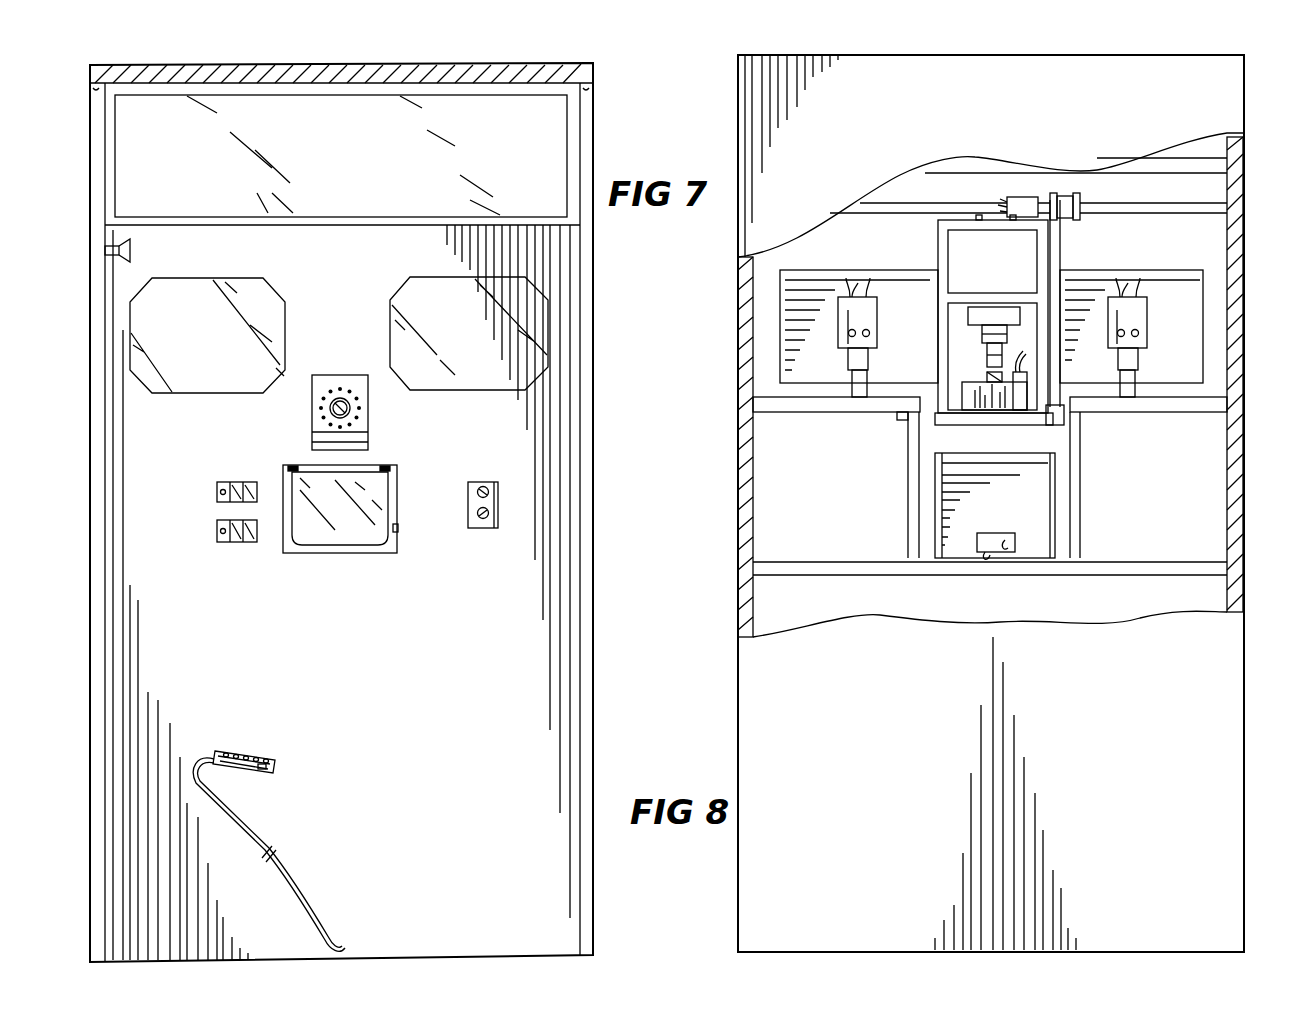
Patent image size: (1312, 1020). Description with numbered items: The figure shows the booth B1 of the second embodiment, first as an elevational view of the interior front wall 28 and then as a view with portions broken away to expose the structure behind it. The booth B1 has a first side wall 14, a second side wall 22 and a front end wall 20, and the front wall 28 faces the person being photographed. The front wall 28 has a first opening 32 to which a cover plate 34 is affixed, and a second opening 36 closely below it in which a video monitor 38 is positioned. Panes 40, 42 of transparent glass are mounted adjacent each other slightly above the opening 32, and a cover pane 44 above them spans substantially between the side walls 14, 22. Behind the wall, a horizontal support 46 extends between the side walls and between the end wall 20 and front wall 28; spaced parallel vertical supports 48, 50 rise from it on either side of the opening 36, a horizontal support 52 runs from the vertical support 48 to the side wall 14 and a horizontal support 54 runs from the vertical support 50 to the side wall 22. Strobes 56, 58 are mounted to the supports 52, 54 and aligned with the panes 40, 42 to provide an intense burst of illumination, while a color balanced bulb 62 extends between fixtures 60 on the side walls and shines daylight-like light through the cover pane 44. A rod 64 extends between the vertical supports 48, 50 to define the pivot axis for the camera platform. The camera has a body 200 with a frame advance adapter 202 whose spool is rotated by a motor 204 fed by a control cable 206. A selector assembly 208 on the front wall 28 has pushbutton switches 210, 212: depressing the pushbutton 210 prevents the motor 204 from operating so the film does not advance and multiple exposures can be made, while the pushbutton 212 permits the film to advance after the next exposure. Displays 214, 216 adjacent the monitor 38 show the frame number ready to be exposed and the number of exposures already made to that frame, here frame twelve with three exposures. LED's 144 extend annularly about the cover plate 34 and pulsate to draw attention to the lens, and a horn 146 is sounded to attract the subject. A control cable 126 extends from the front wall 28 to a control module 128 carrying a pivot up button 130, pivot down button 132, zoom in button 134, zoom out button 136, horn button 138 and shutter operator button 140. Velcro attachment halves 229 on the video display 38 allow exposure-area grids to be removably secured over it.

In FIG. 8, the first side wall 14 is at (1229, 537).
In FIG. 8, the front end wall 20 is at (896, 770).
In FIG. 8, the second side wall 22 is at (738, 492).
In FIG. 7, the front wall 28 is at (463, 850).
In FIG. 8, the front wall 28 is at (1148, 504).
In FIG. 7, the first opening 32 is at (333, 387).
In FIG. 7, the cover plate 34 is at (344, 375).
In FIG. 7, the second opening 36 is at (346, 494).
In FIG. 8, the second opening 36 is at (1032, 505).
In FIG. 7, the video monitor 38 is at (372, 500).
In FIG. 8, the video monitor 38 is at (1006, 512).
In FIG. 7, the pane 40 is at (268, 292).
In FIG. 8, the pane 40 is at (1131, 312).
In FIG. 7, the pane 42 is at (405, 290).
In FIG. 8, the pane 42 is at (859, 312).
In FIG. 7, the cover pane 44 is at (320, 166).
In FIG. 8, the cover pane 44 is at (938, 198).
In FIG. 8, the horizontal support 46 is at (1030, 565).
In FIG. 8, the vertical support 48 is at (1082, 462).
In FIG. 8, the vertical support 50 is at (907, 508).
In FIG. 8, the horizontal support 52 is at (1146, 420).
In FIG. 8, the horizontal support 54 is at (792, 418).
In FIG. 8, the strobe 56 is at (1150, 320).
In FIG. 8, the strobe 58 is at (878, 322).
In FIG. 8, the fixture 60 is at (1248, 133).
In FIG. 8, the color balanced bulb 62 is at (1152, 173).
In FIG. 8, the rod 64 is at (897, 420).
In FIG. 7, the control cable 126 is at (322, 936).
In FIG. 7, the control module 128 is at (268, 744).
In FIG. 7, the pivot up button 130 is at (222, 750).
In FIG. 7, the pivot down button 132 is at (236, 751).
In FIG. 7, the zoom in button 134 is at (243, 765).
In FIG. 7, the zoom out button 136 is at (255, 753).
In FIG. 7, the horn button 138 is at (268, 754).
In FIG. 7, the shutter operator button 140 is at (276, 759).
In FIG. 7, the LED's 144 is at (323, 417).
In FIG. 7, the horn 146 is at (131, 250).
In FIG. 8, the body 200 is at (962, 392).
In FIG. 8, the frame advance adapter 202 is at (1021, 412).
In FIG. 8, the motor 204 is at (1030, 374).
In FIG. 8, the control cable 206 is at (1030, 351).
In FIG. 7, the selector assembly 208 is at (490, 500).
In FIG. 7, the pushbutton switch 210 is at (485, 487).
In FIG. 7, the pushbutton switch 212 is at (485, 520).
In FIG. 7, the display 214 is at (217, 490).
In FIG. 7, the display 216 is at (217, 530).
In FIG. 7, the Velcro attachment half 229 is at (292, 465).
In FIG. 7, the booth B1 is at (78, 184).